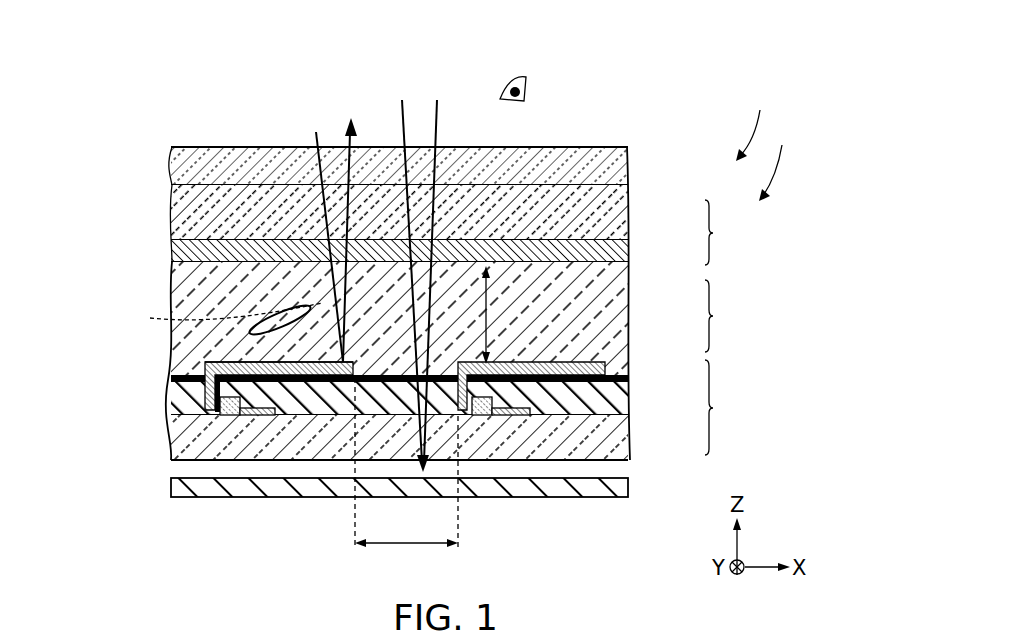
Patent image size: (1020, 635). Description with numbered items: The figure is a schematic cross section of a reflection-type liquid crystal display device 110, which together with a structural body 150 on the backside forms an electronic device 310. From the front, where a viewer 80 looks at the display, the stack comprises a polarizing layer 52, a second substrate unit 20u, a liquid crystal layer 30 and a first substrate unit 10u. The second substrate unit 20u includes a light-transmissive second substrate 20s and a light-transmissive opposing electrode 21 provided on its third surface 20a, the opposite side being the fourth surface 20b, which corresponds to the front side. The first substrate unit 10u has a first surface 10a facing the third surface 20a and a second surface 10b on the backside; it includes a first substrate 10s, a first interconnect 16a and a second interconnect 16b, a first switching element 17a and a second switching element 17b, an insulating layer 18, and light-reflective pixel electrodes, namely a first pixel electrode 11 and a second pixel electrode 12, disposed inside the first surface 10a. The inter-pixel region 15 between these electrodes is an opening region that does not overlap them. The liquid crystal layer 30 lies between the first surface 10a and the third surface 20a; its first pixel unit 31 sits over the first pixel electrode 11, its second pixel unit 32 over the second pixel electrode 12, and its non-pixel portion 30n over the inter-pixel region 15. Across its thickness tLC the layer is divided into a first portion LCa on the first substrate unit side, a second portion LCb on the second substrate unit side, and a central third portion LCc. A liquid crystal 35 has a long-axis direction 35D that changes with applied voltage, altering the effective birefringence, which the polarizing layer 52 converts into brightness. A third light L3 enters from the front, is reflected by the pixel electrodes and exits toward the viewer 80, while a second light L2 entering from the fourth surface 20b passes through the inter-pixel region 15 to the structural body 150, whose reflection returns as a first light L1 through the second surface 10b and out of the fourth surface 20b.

The polarizing layer 52 is at (595, 165).
The second substrate 20s is at (595, 216).
The opposing electrode 21 is at (595, 250).
The second substrate unit 20u is at (733, 232).
The fourth surface 20b is at (218, 184).
The third surface 20a is at (218, 262).
The liquid crystal layer 30 is at (460, 318).
The second portion LCb is at (568, 275).
The third portion LCc is at (568, 317).
The first portion LCa is at (568, 352).
The second pixel electrode 12 is at (600, 373).
The insulating layer 18 is at (598, 398).
The first substrate 10s is at (600, 442).
The first substrate unit 10u is at (733, 407).
The first pixel unit 31 is at (268, 345).
The second pixel unit 32 is at (541, 348).
The first switching element 17a is at (233, 417).
The first interconnect 16a is at (256, 417).
The second switching element 17b is at (481, 417).
The second interconnect 16b is at (511, 417).
The first surface 10a is at (213, 380).
The first pixel electrode 11 is at (230, 372).
The second surface 10b is at (188, 462).
The structural body 150 is at (610, 490).
The liquid crystal 35 is at (272, 313).
The long-axis direction 35D is at (211, 316).
The first light L1 is at (438, 135).
The second light L2 is at (402, 115).
The third light L3 is at (316, 135).
The thickness tLC is at (490, 300).
The viewer 80 is at (528, 88).
The liquid crystal display device 110 is at (762, 122).
The electronic device 310 is at (784, 160).
The non-pixel portion 30n is at (406, 463).
The inter-pixel region 15 is at (406, 567).